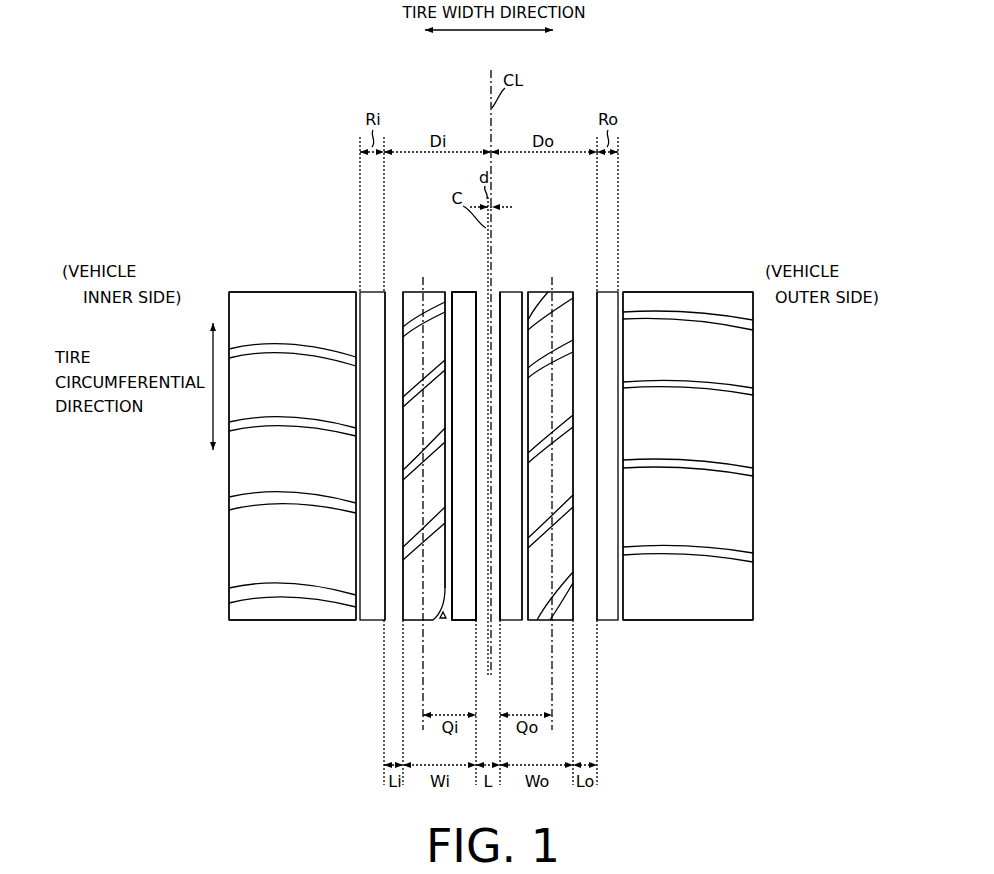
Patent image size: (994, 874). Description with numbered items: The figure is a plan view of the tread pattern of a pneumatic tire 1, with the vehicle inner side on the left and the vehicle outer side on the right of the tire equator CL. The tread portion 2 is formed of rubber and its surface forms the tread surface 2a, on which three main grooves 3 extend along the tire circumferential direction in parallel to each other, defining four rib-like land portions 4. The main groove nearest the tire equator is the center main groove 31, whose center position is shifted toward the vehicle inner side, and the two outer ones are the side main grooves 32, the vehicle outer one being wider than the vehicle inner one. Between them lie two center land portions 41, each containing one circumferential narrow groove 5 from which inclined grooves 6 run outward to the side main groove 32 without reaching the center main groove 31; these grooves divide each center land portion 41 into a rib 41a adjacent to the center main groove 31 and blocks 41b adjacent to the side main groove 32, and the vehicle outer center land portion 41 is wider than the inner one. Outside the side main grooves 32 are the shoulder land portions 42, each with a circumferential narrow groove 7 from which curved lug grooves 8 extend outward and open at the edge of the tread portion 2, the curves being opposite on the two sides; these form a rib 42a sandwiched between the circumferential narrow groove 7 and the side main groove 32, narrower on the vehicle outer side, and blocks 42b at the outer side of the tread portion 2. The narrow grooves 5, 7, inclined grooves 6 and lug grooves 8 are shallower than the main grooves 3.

The pneumatic tire 1 is at (683, 190).
The tread portion 2 is at (670, 292).
The tread surface 2a is at (562, 293).
The main grooves 3 is at (488, 456).
The land portions 4 is at (464, 456).
The narrow groove 5 is at (449, 586).
The inclined grooves 6 is at (405, 573).
The circumferential narrow groove 7 is at (359, 578).
The lug grooves 8 is at (293, 596).
The center main groove 31 is at (486, 293).
The side main grooves 32 is at (585, 294).
The center land portions 41 is at (511, 293).
The rib 41a is at (446, 292).
The blocks 41b is at (412, 293).
The shoulder land portions 42 is at (700, 292).
The rib 42a is at (357, 292).
The blocks 42b is at (259, 292).